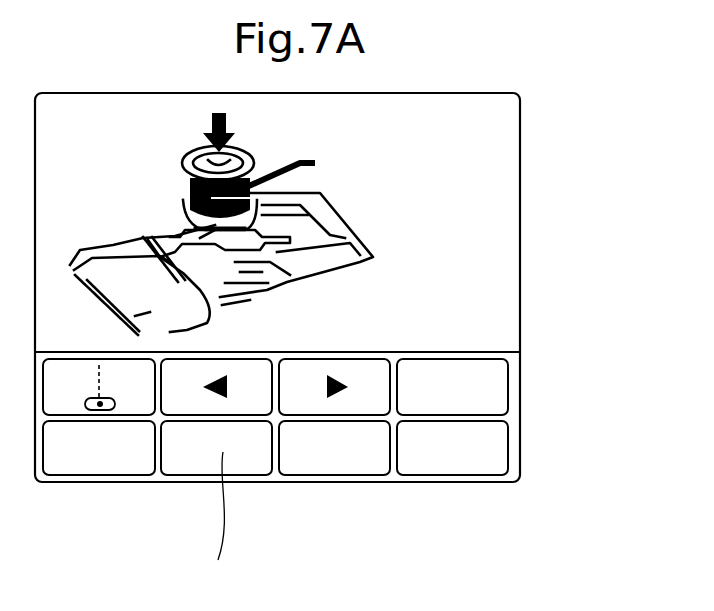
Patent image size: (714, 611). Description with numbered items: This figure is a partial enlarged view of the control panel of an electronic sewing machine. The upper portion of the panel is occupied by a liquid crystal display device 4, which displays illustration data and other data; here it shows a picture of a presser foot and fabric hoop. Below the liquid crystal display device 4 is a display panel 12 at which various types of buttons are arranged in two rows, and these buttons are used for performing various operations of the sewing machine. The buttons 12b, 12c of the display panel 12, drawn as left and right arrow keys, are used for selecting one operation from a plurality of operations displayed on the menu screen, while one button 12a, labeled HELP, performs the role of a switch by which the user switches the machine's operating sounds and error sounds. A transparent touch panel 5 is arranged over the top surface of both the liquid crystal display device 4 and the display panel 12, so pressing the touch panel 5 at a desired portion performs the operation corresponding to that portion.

The liquid crystal display device 4 is at (554, 87).
The transparent touch panel 5 is at (614, 87).
The display panel 12 is at (537, 348).
The button 12a is at (410, 466).
The button 12b is at (177, 403).
The button 12c is at (294, 402).